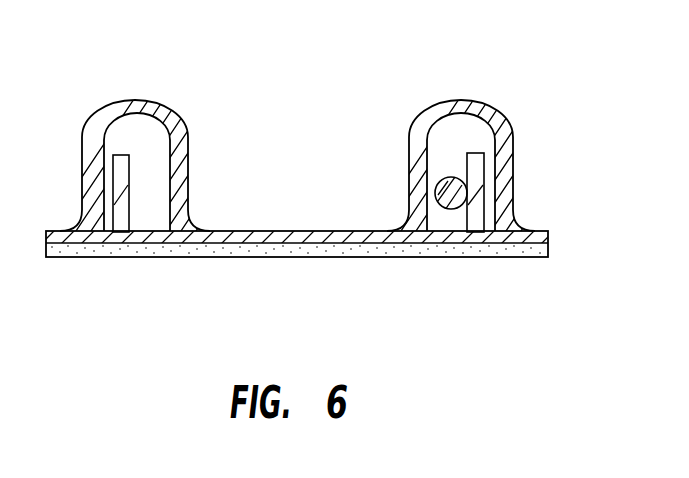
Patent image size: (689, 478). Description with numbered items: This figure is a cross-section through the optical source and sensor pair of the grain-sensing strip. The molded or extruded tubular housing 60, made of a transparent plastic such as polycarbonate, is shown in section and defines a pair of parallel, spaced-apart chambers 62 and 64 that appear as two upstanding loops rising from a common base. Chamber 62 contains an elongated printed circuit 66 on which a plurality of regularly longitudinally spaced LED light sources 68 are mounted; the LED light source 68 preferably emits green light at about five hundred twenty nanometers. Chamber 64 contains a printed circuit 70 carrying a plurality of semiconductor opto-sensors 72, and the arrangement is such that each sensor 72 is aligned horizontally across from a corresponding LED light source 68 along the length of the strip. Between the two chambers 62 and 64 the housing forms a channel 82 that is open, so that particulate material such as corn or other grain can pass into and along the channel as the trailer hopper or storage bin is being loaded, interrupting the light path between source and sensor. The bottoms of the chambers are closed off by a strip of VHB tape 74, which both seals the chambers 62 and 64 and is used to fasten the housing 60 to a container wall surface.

The tubular housing 60 is at (270, 83).
The chamber 62 is at (470, 117).
The chamber 64 is at (137, 100).
The elongated printed circuit 66 is at (482, 170).
The LED light source 68 is at (440, 182).
The printed circuit 70 is at (108, 152).
The semiconductor opto-sensor 72 is at (132, 192).
The VHB tape 74 is at (368, 259).
The channel 82 is at (271, 231).